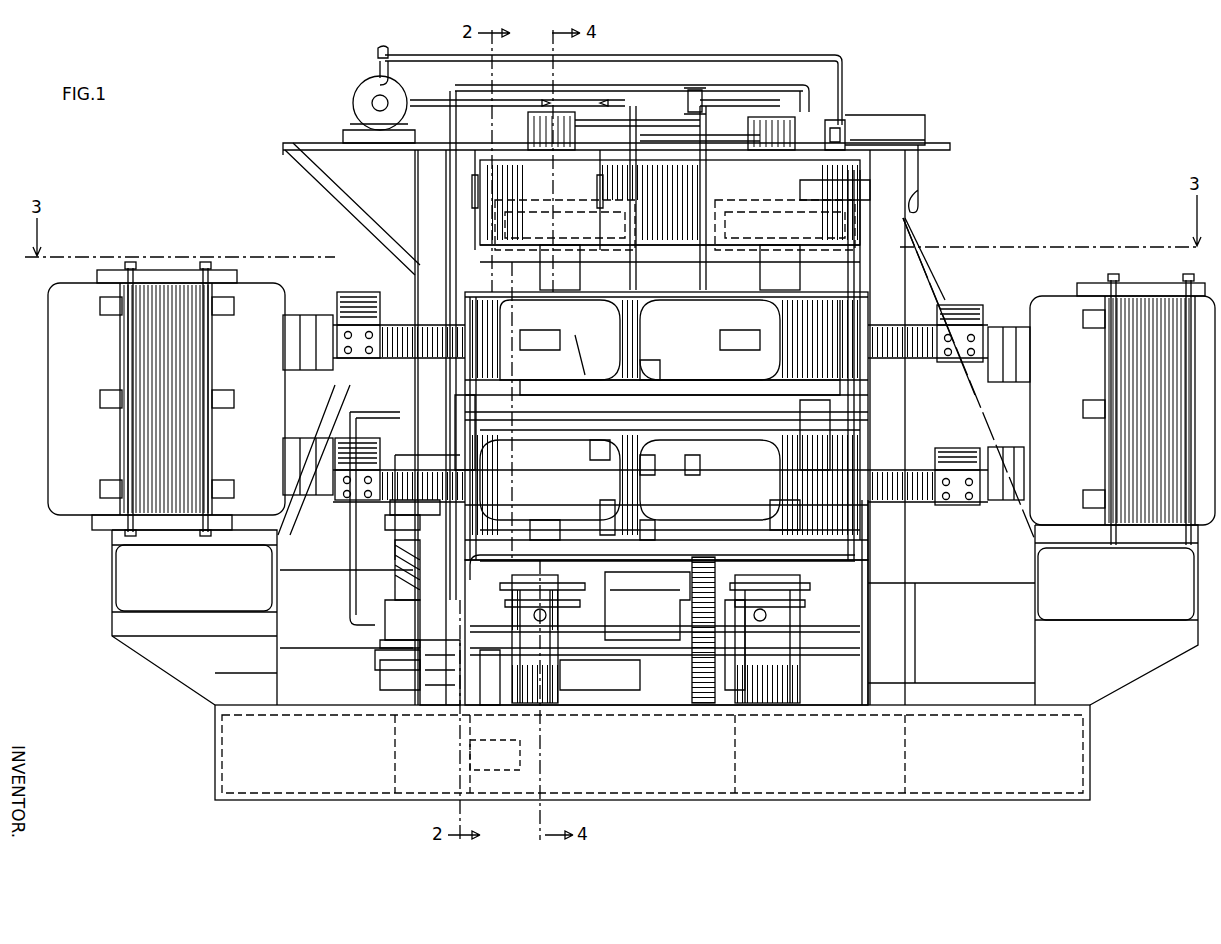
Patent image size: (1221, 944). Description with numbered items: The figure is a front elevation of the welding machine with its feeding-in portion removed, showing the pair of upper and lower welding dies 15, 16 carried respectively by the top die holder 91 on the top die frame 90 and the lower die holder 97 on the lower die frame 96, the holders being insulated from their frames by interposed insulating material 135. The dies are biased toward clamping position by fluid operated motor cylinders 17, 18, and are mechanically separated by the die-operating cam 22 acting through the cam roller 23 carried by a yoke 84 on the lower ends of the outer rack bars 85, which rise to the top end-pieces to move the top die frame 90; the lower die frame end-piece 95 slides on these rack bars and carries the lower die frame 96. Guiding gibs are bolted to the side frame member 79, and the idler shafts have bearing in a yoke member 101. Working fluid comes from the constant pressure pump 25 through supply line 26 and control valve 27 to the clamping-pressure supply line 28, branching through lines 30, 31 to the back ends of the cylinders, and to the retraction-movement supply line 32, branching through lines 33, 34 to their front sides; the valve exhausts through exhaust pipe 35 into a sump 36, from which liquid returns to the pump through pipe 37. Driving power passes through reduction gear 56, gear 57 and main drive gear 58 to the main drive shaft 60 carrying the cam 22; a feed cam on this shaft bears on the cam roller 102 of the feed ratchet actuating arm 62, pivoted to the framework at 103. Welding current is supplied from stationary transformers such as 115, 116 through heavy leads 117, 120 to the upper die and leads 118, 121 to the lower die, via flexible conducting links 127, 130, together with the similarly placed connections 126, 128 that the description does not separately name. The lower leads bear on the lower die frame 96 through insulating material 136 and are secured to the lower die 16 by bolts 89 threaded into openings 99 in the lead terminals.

The upper welding die 15 is at (820, 400).
The lower welding die 16 is at (490, 440).
The fluid operated motor cylinder 17 is at (528, 135).
The fluid operated motor cylinder 18 is at (655, 639).
The die-operating cam 22 is at (395, 655).
The cam roller 23 is at (375, 640).
The constant pressure pump 25 is at (352, 101).
The supply line 26 is at (748, 52).
The control valve 27 is at (860, 112).
The clamping-pressure supply line 28 is at (708, 86).
The line 30 is at (698, 104).
The line 31 is at (640, 92).
The retraction-movement supply line 32 is at (850, 235).
The line 33 is at (810, 345).
The line 34 is at (890, 312).
The exhaust pipe 35 is at (700, 143).
The sump 36 is at (640, 246).
The pipe 37 is at (490, 112).
The reduction gear 56 is at (646, 594).
The gear 57 is at (670, 680).
The main drive gear 58 is at (700, 700).
The main drive shaft 60 is at (600, 690).
The feed ratchet actuating arm 62 is at (505, 705).
The side frame member 79 is at (420, 474).
The yoke 84 is at (395, 610).
The outer rack bars 85 is at (405, 548).
The bolts 89 is at (612, 440).
The top die frame 90 is at (640, 317).
The top die holder 91 is at (582, 345).
The lower die frame end-piece 95 is at (405, 520).
The lower die frame 96 is at (620, 526).
The lower die holder 97 is at (650, 478).
The openings 99 is at (692, 478).
The yoke member 101 is at (405, 509).
The cam roller 102 is at (468, 705).
The pivot 103 is at (520, 753).
The power supply transformer 115 is at (172, 290).
The power supply transformer 116 is at (1160, 300).
The lead 117 is at (555, 328).
The lead 118 is at (575, 505).
The lead 120 is at (760, 345).
The lead 121 is at (790, 500).
The coupling 126 is at (363, 277).
The flexible conducting link 127 is at (365, 440).
The coupling 128 is at (955, 306).
The flexible conducting link 130 is at (975, 433).
The insulating material 135 is at (648, 375).
The insulating material 136 is at (656, 495).